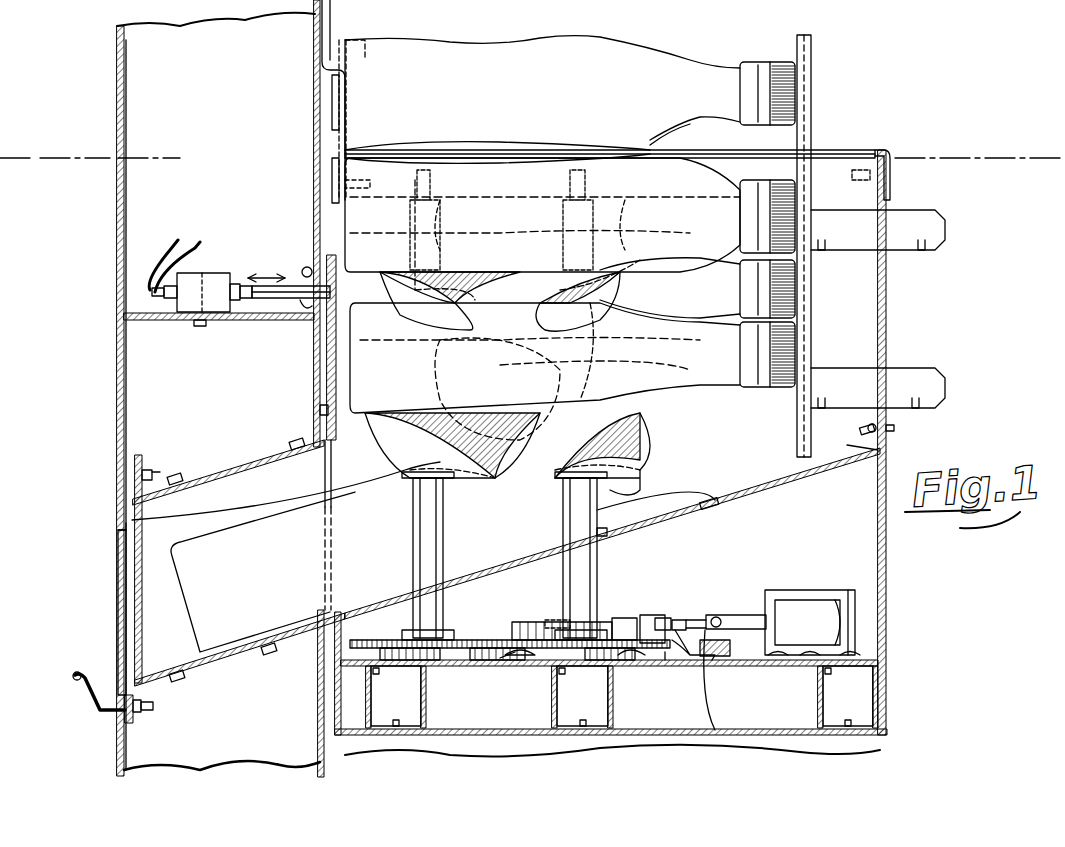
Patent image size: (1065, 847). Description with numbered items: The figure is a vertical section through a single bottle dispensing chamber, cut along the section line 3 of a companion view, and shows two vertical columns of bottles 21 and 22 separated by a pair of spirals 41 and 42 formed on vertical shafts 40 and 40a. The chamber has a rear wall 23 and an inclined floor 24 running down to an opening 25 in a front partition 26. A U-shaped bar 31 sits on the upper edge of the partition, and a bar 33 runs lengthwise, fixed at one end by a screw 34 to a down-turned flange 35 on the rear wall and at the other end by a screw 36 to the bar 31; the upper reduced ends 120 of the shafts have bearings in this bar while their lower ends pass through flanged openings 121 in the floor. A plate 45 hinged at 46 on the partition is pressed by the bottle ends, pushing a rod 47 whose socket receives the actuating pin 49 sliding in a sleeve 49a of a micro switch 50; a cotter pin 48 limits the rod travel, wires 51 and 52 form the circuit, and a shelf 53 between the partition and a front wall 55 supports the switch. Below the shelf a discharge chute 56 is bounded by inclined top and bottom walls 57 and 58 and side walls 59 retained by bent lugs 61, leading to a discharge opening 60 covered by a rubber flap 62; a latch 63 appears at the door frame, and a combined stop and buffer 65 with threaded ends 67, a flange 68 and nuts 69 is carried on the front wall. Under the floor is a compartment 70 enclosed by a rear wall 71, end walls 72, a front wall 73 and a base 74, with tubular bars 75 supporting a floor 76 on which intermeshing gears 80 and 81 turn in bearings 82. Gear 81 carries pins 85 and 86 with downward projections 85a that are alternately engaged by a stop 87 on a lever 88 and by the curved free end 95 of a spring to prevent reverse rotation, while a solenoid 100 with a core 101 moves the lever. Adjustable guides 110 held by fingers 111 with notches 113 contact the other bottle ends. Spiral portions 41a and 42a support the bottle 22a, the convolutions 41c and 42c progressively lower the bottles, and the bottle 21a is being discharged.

The section line 3- 3 is at (44, 190).
The bottle 21 is at (697, 190).
The bottle being discharged 21a is at (263, 572).
The bottle 22 is at (572, 358).
The bottle 22a is at (542, 154).
The rear wall 23 is at (885, 318).
The floor 24 is at (698, 510).
The opening 25 is at (333, 476).
The front partition 26 is at (312, 155).
The U-shaped bar 31 is at (333, 170).
The bar 33 is at (825, 165).
The screw 34 is at (860, 175).
The down-turned flange 35 is at (895, 205).
The screw 36 is at (370, 175).
The shaft 40 is at (412, 530).
The shaft 40a is at (598, 580).
The spiral 41 is at (455, 290).
The spiral portion 41a is at (395, 275).
The spiral convolution 41c is at (455, 378).
The spiral 42 is at (610, 292).
The spiral portion 42a is at (640, 265).
The spiral convolution 42c is at (640, 358).
The plate 45 is at (333, 375).
The hinge 46 is at (305, 262).
The rod 47 is at (268, 300).
The cotter pin 48 is at (300, 280).
The actuating pin 49 is at (245, 305).
The sleeve 49a is at (238, 285).
The micro switch 50 is at (196, 272).
The wire 51 is at (175, 235).
The wire 52 is at (200, 235).
The shelf 53 is at (175, 318).
The front wall 55 is at (118, 245).
The discharge chute 56 is at (118, 555).
The top wall 57 is at (228, 475).
The bottom wall 58 is at (232, 660).
The side wall 59 is at (125, 518).
The discharge opening 60 is at (118, 612).
The lug 61 is at (175, 480).
The rubber flap 62 is at (150, 545).
The latch 63 is at (148, 470).
The combined stop and buffer 65 is at (75, 678).
The threaded ends 67 is at (150, 710).
The flange 68 is at (128, 725).
The nut 69 is at (140, 690).
The compartment 70 is at (880, 565).
The rear wall 71 is at (887, 645).
The end wall 72 is at (885, 450).
The front wall 73 is at (335, 715).
The base 74 is at (688, 728).
The tubular bar 75 is at (428, 692).
The floor 76 is at (725, 668).
The gear 80 is at (365, 648).
The gear 81 is at (622, 640).
The bearing 82 is at (440, 645).
The pin 85 is at (518, 630).
The projection 85a is at (528, 655).
The pin 86 is at (665, 622).
The stop 87 is at (690, 622).
The lever 88 is at (710, 700).
The curved free end 95 is at (505, 660).
The solenoid 100 is at (805, 603).
The core 101 is at (740, 605).
The adjustable guide 110 is at (800, 425).
The finger 111 is at (945, 230).
The notch 113 is at (820, 245).
The upper reduced end 120 is at (455, 200).
The flanged opening 121 is at (625, 530).